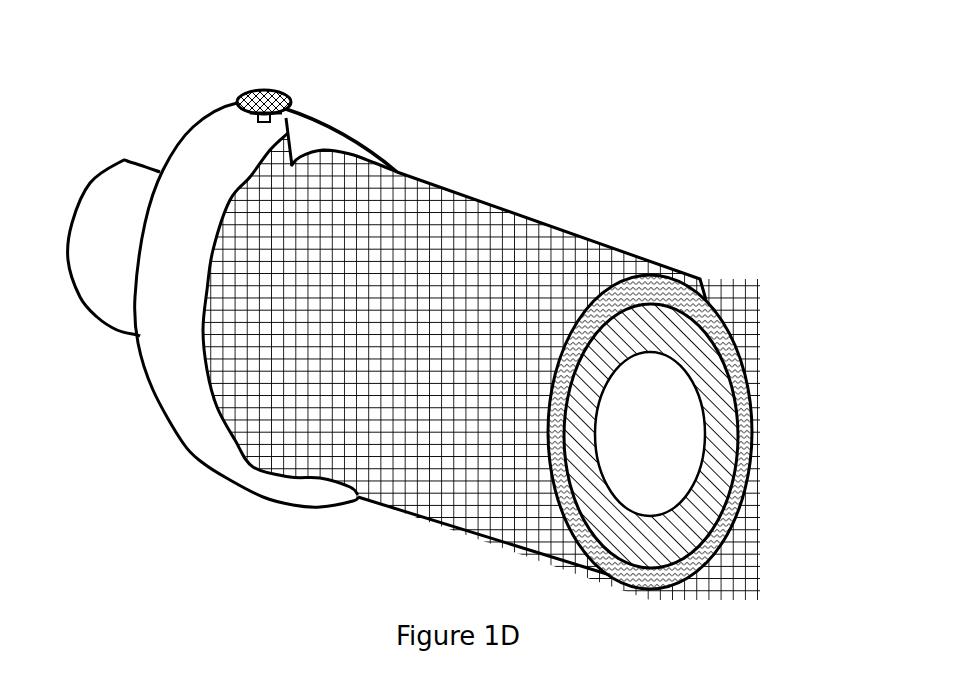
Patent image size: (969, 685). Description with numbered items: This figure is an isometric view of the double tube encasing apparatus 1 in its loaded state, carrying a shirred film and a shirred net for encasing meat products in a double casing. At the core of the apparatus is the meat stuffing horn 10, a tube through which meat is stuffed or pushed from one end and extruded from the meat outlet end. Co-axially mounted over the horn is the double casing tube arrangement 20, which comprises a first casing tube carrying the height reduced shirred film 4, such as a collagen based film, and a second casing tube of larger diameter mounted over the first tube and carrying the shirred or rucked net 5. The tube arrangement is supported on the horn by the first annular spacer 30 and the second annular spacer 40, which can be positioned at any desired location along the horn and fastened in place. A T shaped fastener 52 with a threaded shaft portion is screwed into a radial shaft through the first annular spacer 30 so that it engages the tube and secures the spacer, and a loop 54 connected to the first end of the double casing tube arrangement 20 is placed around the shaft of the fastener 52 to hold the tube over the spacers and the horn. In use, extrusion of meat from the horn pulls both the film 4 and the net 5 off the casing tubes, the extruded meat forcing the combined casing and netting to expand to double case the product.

The double tube encasing apparatus 1 is at (517, 350).
The film 4 is at (735, 352).
The net 5 is at (472, 194).
The meat stuffing horn 10 is at (114, 156).
The double casing tube arrangement 20 is at (698, 301).
The first annular spacer 30 is at (186, 116).
The second annular spacer 40 is at (742, 397).
The T shaped fastener 52 is at (272, 84).
The loop 54 is at (298, 134).